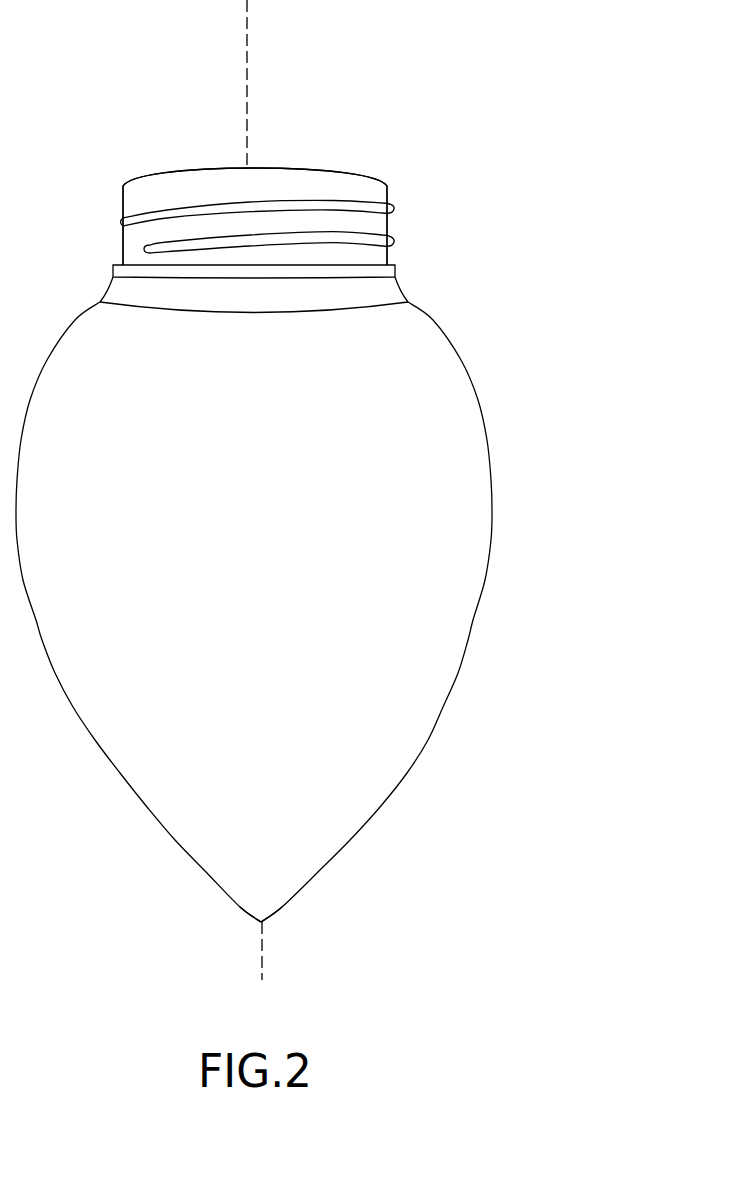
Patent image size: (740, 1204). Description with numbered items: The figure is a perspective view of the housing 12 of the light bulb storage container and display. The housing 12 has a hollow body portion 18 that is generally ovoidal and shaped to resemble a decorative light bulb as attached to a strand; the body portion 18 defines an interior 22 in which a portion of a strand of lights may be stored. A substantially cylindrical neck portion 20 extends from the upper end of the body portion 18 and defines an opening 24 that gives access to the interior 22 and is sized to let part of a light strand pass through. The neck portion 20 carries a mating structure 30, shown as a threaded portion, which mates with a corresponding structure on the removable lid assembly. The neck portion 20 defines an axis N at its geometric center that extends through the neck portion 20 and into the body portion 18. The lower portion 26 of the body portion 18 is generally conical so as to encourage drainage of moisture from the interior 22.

The housing 12 is at (181, 82).
The axis N is at (247, 22).
The body portion 18 is at (263, 558).
The neck portion 20 is at (380, 223).
The interior 22 is at (275, 167).
The opening 24 is at (255, 216).
The lower portion 26 is at (263, 937).
The mating structure 30 is at (121, 221).